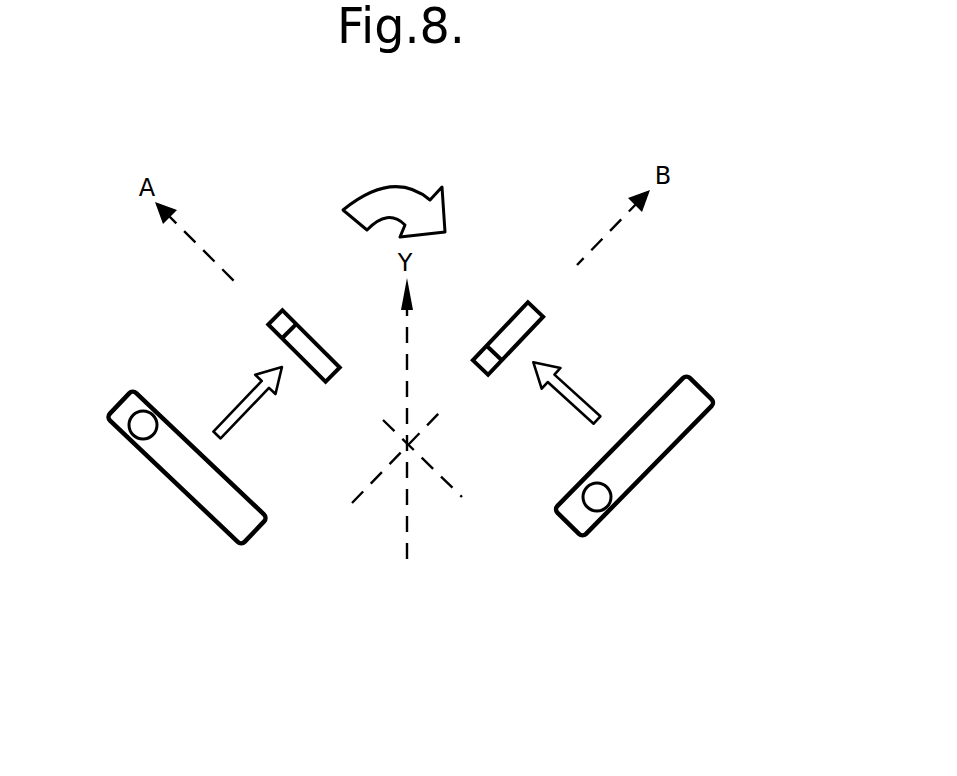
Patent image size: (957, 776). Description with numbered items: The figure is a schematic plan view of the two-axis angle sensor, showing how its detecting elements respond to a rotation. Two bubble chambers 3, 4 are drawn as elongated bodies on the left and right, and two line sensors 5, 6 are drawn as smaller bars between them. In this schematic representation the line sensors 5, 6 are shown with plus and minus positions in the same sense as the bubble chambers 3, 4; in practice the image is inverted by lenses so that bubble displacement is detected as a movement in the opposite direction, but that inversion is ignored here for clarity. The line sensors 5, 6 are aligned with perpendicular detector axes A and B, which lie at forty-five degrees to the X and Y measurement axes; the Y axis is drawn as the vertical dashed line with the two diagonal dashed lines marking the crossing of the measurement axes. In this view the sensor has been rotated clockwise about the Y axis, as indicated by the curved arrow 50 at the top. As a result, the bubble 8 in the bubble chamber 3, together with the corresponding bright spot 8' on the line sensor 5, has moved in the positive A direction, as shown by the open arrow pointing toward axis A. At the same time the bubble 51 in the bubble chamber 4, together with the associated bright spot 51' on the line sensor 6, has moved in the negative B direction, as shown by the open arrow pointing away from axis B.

The bubble chamber 3 is at (108, 439).
The bubble chamber 4 is at (718, 424).
The line sensor 5 is at (317, 338).
The line sensor 6 is at (502, 323).
The bubble 8 is at (115, 469).
The bright spot 8' is at (245, 345).
The clockwise rotation about the Y axis 50 is at (360, 192).
The bubble 51 is at (635, 525).
The bright spot 51' is at (494, 403).